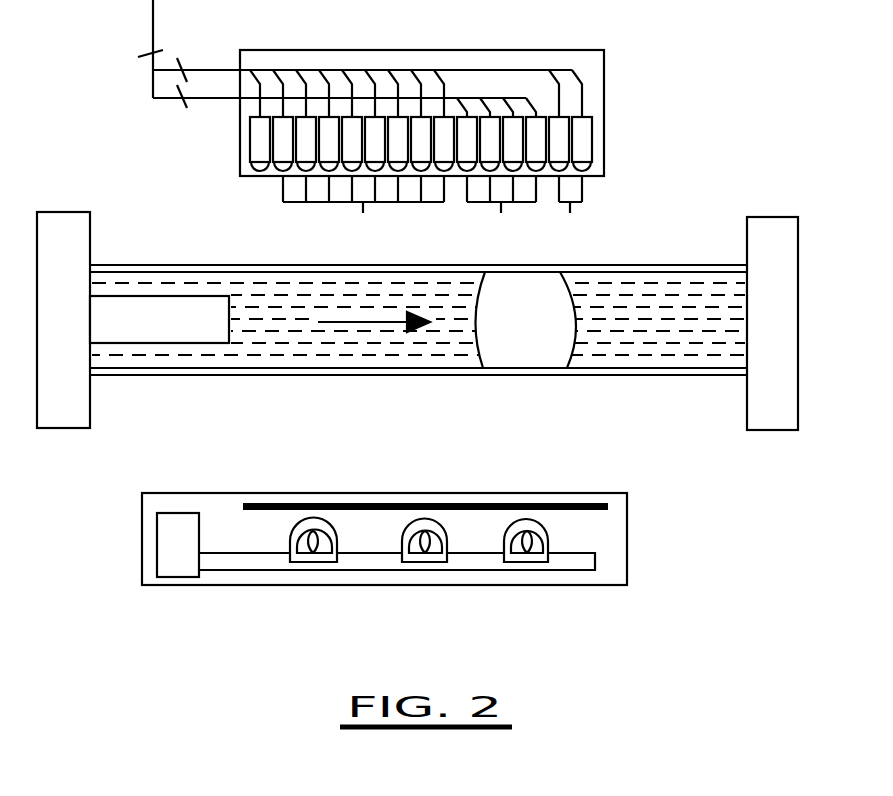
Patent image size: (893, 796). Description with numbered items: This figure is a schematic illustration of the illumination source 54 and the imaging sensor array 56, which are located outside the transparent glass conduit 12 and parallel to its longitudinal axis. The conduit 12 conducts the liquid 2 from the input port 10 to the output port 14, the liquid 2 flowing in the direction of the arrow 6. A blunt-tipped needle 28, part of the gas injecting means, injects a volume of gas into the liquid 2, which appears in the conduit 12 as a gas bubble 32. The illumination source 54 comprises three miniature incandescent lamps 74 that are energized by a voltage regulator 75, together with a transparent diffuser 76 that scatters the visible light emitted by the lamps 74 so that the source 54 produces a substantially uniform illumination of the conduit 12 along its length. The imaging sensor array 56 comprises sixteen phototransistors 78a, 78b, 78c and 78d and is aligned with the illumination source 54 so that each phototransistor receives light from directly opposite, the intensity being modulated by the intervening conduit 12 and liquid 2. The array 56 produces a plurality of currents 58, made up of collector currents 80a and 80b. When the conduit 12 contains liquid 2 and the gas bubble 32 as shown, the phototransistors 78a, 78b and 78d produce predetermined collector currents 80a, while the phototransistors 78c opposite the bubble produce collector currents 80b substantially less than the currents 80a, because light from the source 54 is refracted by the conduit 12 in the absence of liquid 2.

The liquid 2 is at (673, 350).
The arrow 6 is at (373, 323).
The input port 10 is at (66, 212).
The transparent glass conduit 12 is at (192, 265).
The output port 14 is at (773, 216).
The blunt-tipped needle 28 is at (145, 308).
The gas bubble 32 is at (532, 345).
The illumination source 54 is at (418, 544).
The imaging sensor array 56 is at (441, 137).
The plurality of currents 58 is at (152, 27).
The miniature incandescent lamps 74 is at (322, 555).
The voltage regulator 75 is at (175, 568).
The transparent diffuser 76 is at (252, 502).
The phototransistors 78a is at (257, 172).
The phototransistors 78b is at (363, 213).
The phototransistors 78c is at (501, 213).
The phototransistors 78d is at (570, 213).
The collector currents 80a is at (212, 67).
The collector currents 80b is at (215, 100).